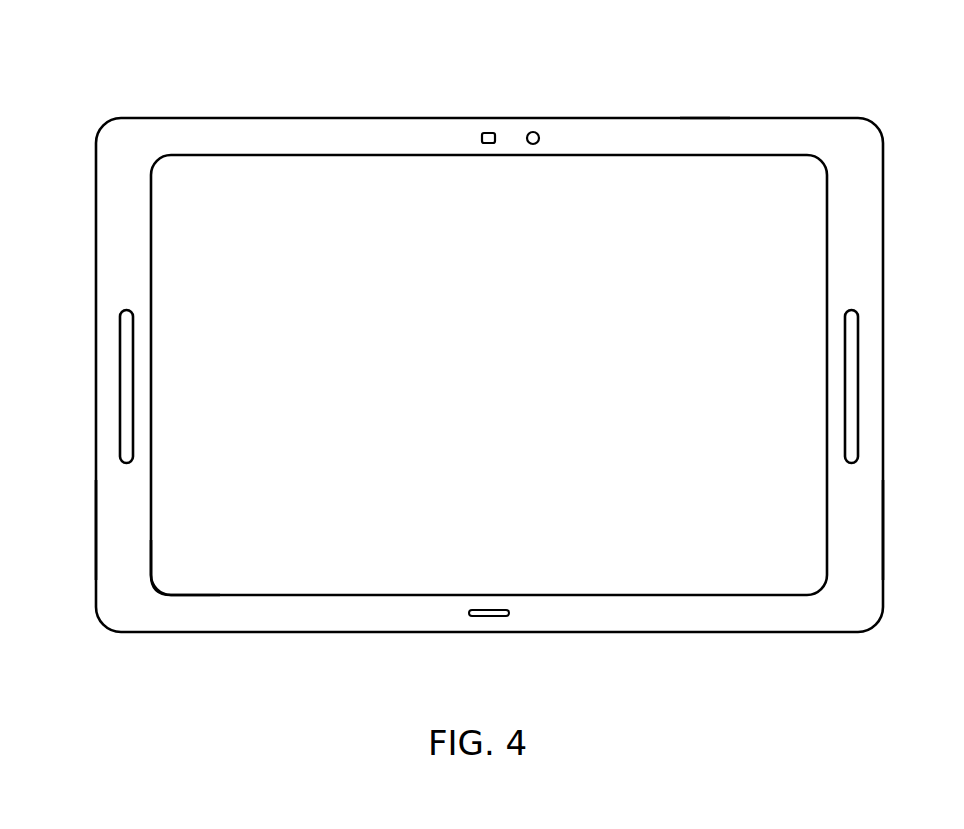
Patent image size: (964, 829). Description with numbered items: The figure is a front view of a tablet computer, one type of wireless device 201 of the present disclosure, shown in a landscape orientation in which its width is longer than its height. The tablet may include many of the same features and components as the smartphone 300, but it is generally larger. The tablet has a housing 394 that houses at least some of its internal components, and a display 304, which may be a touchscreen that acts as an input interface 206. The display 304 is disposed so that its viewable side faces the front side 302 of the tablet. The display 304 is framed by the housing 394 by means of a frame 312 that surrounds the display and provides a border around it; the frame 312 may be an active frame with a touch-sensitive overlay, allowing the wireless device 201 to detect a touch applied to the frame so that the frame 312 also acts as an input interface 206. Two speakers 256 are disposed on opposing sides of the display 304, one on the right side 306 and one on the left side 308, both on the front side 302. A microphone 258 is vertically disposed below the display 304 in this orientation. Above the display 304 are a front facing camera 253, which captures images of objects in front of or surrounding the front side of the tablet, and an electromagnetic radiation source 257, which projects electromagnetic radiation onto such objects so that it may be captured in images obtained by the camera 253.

The wireless device 201 is at (157, 92).
The smartphone 300 is at (254, 92).
The frame 312 is at (112, 181).
The input interface 206 is at (353, 153).
The display 304 is at (258, 215).
The front facing camera 253 is at (483, 132).
The electromagnetic radiation source 257 is at (532, 131).
The housing 394 is at (705, 118).
The speakers 256 is at (122, 393).
The front side 302 is at (100, 528).
The right side 306 is at (828, 527).
The left side 308 is at (150, 565).
The microphone 258 is at (489, 617).